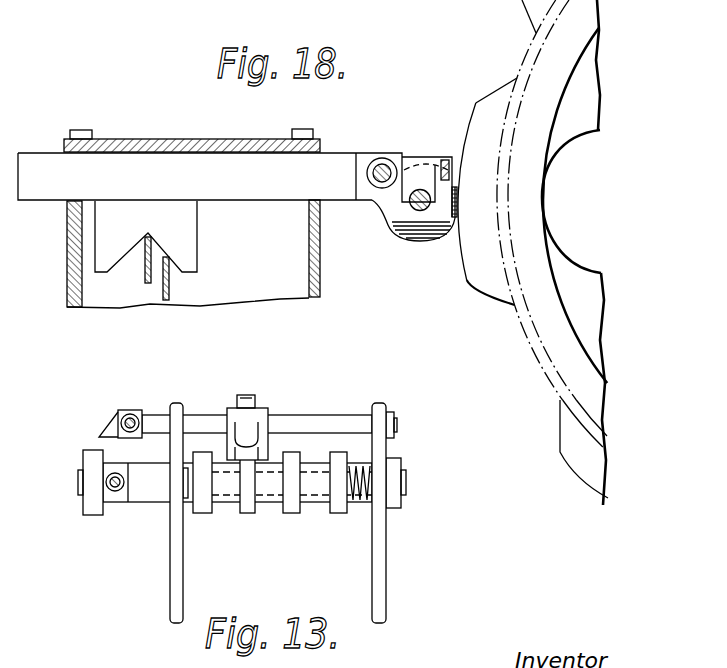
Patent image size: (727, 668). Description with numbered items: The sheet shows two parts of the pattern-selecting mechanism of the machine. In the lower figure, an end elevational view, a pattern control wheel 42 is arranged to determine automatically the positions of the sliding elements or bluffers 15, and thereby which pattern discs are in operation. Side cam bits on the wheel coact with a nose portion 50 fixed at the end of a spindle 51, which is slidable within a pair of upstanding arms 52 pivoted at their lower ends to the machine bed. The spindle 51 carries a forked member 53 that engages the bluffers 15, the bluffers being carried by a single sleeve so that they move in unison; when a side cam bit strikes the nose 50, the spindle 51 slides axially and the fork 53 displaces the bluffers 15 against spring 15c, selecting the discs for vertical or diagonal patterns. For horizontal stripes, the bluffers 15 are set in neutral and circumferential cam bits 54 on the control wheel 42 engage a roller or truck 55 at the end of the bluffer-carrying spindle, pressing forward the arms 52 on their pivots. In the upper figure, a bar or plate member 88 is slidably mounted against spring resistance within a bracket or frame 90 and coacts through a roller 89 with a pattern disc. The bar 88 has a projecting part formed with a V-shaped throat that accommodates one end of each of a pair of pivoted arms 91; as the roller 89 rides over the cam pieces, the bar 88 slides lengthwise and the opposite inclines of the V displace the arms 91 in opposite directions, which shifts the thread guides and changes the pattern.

In FIG. 18, the bar or plate member 88 is at (210, 218).
In FIG. 18, the bracket or frame 90 is at (67, 262).
In FIG. 18, the pivoted arms 91 is at (166, 301).
In FIG. 18, the roller 89 is at (407, 238).
In FIG. 18, the circumferential cam bits 54 is at (477, 106).
In FIG. 18, the pattern control wheel 42 is at (556, 367).
In FIG. 13, the nose portion 50 is at (112, 428).
In FIG. 13, the spindle 51 is at (320, 423).
In FIG. 13, the forked member 53 is at (261, 414).
In FIG. 13, the roller or truck 55 is at (92, 503).
In FIG. 13, the sliding elements or bluffers 15 is at (293, 513).
In FIG. 13, the spring 15c is at (362, 503).
In FIG. 13, the upstanding arms 52 is at (172, 568).